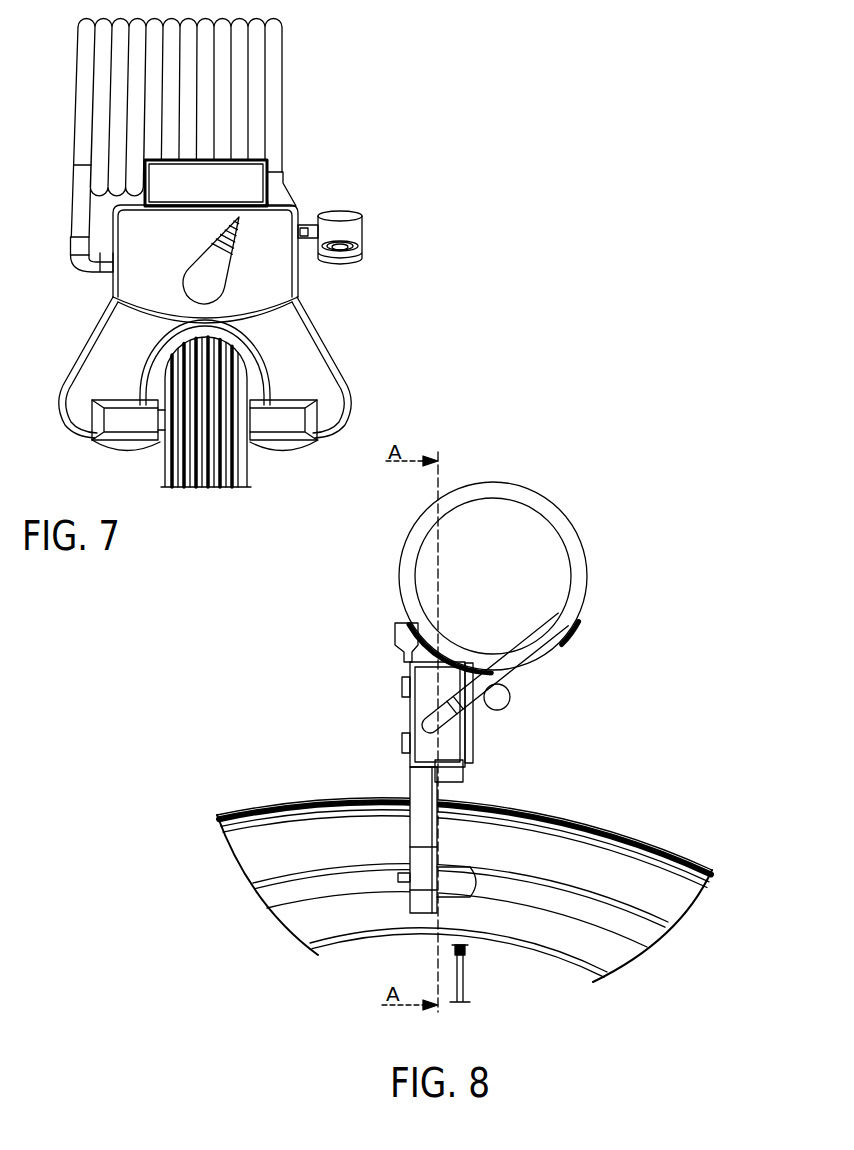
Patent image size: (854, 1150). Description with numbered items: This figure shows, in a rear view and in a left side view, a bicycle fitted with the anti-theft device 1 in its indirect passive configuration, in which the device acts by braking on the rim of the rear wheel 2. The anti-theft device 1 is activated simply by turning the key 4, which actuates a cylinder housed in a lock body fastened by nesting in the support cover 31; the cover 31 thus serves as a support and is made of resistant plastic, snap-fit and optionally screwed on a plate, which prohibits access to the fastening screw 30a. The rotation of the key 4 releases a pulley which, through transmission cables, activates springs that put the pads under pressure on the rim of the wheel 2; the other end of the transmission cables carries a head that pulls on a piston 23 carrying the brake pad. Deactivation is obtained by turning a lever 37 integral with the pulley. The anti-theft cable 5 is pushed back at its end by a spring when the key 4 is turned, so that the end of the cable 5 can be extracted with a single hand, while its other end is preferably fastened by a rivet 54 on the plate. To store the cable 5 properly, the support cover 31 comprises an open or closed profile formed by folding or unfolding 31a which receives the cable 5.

In FIG. 7, the anti-theft device 1 is at (337, 158).
In FIG. 8, the anti-theft device 1 is at (297, 699).
In FIG. 7, the wheel 2 is at (243, 470).
In FIG. 8, the wheel 2 is at (315, 859).
In FIG. 7, the key 4 is at (360, 226).
In FIG. 7, the anti-theft cable 5 is at (275, 92).
In FIG. 8, the anti-theft cable 5 is at (577, 572).
In FIG. 7, the piston 23 is at (163, 422).
In FIG. 8, the fastening screw 30a is at (400, 882).
In FIG. 7, the support cover 31 is at (318, 360).
In FIG. 8, the support cover 31 is at (410, 782).
In FIG. 8, the folding or unfolding profile 31a is at (577, 647).
In FIG. 7, the lever 37 is at (207, 278).
In FIG. 8, the lever 37 is at (510, 704).
In FIG. 8, the rivet 54 is at (398, 692).